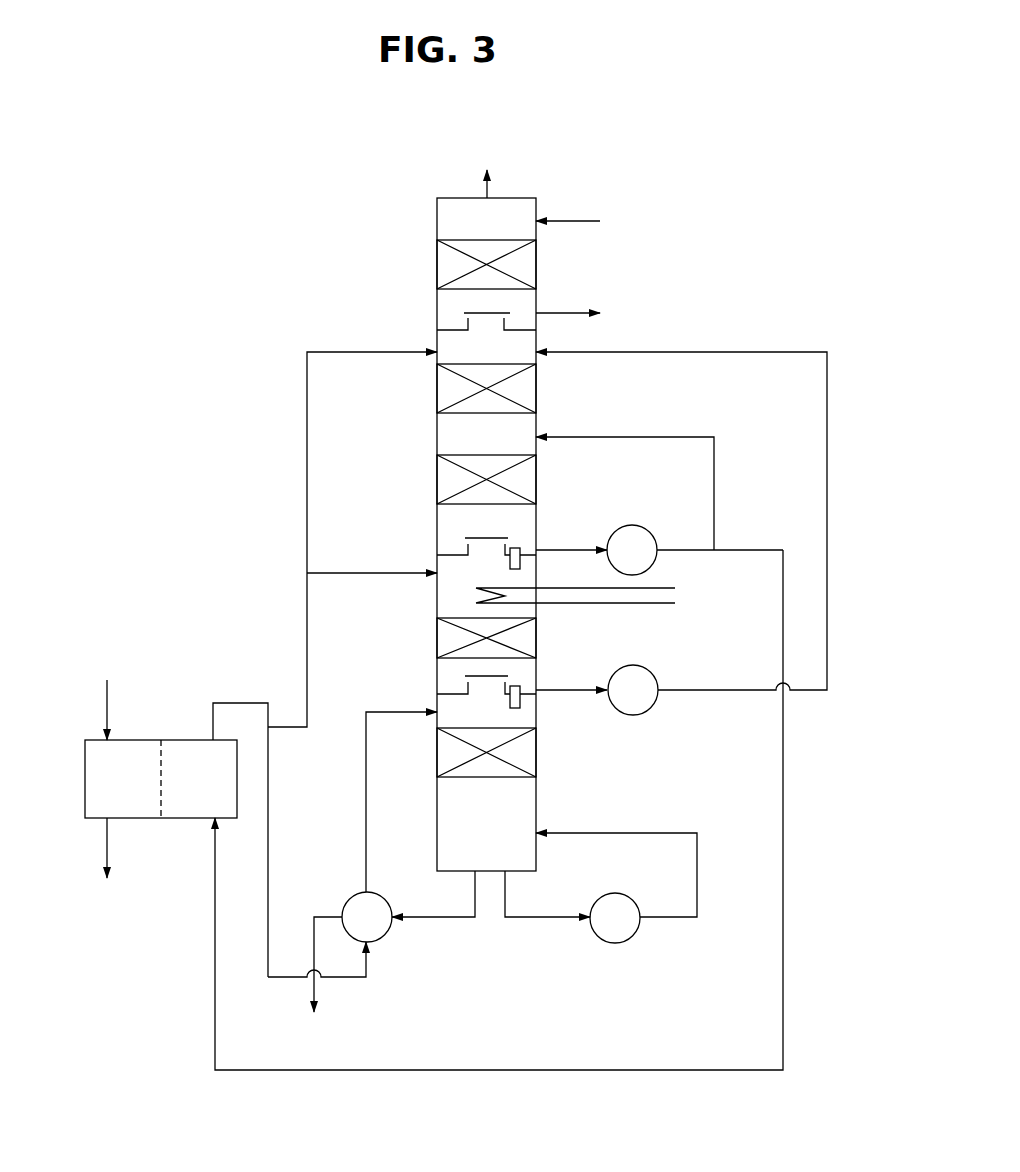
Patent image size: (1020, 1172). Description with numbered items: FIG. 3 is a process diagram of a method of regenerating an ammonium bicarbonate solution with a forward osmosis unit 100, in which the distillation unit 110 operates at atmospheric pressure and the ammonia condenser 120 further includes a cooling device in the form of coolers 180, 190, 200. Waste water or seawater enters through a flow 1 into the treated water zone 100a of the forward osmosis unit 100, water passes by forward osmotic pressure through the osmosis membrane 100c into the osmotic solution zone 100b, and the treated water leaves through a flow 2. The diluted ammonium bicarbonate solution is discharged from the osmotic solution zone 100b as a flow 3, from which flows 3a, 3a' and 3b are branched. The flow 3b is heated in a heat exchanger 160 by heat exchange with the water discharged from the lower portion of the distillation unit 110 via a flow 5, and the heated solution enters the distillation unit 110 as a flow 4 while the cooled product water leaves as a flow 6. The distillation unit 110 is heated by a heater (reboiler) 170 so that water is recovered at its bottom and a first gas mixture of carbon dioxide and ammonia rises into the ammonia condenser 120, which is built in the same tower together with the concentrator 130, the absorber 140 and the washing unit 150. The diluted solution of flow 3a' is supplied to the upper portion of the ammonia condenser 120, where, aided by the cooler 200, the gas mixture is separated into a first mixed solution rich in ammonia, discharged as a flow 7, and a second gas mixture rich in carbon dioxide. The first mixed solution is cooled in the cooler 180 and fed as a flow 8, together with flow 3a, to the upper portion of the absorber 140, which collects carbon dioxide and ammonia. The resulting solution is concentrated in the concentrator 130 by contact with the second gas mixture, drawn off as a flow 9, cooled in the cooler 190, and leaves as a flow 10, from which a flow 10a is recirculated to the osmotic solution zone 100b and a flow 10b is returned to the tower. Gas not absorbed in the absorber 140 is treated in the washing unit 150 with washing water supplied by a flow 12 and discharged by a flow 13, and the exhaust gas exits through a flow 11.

The flow of waste water, contaminated water, or seawater 1 is at (107, 696).
The flow of treated water 2 is at (107, 863).
The flow of diluted ammonium bicarbonate solution 3 is at (240, 828).
The flow of diluted ammonium bicarbonate solution to absorber 3a is at (352, 539).
The flow of diluted ammonium bicarbonate solution to ammonia condenser 3a' is at (372, 560).
The flow of diluted ammonium bicarbonate solution to distillation unit 3b is at (316, 975).
The flow of heated ammonium bicarbonate solution 4 is at (401, 788).
The flow of water separated from distillation unit 5 is at (433, 909).
The flow of cooled water 6 is at (326, 980).
The flow of first mixed solution 7 is at (571, 677).
The flow of cooled first mixed solution 8 is at (681, 507).
The flow of concentrated ammonium bicarbonate solution 9 is at (571, 539).
The flow of cooled ammonium bicarbonate solution 10 is at (720, 537).
The flow of cooled ammonium bicarbonate solution to forward osmosis unit 10a is at (499, 797).
The flow of cooled ammonium bicarbonate solution returned to tower 10b is at (625, 480).
The flow of exhaust gas 11 is at (487, 170).
The flow of washing water 12 is at (590, 220).
The discharge flow of washing water 13 is at (590, 314).
The forward osmosis unit 100 is at (85, 760).
The treated water zone 100a is at (124, 782).
The osmotic solution zone 100b is at (201, 782).
The osmosis membrane 100c is at (161, 740).
The distillation unit 110 is at (540, 756).
The ammonia condenser 120 is at (540, 642).
The concentrator 130 is at (540, 483).
The absorber 140 is at (540, 392).
The washing unit 150 is at (540, 268).
The heat exchanger 160 is at (351, 896).
The heater (reboiler) 170 is at (615, 943).
The cooler 180 is at (645, 667).
The cooler 190 is at (646, 525).
The cooler 200 is at (601, 597).